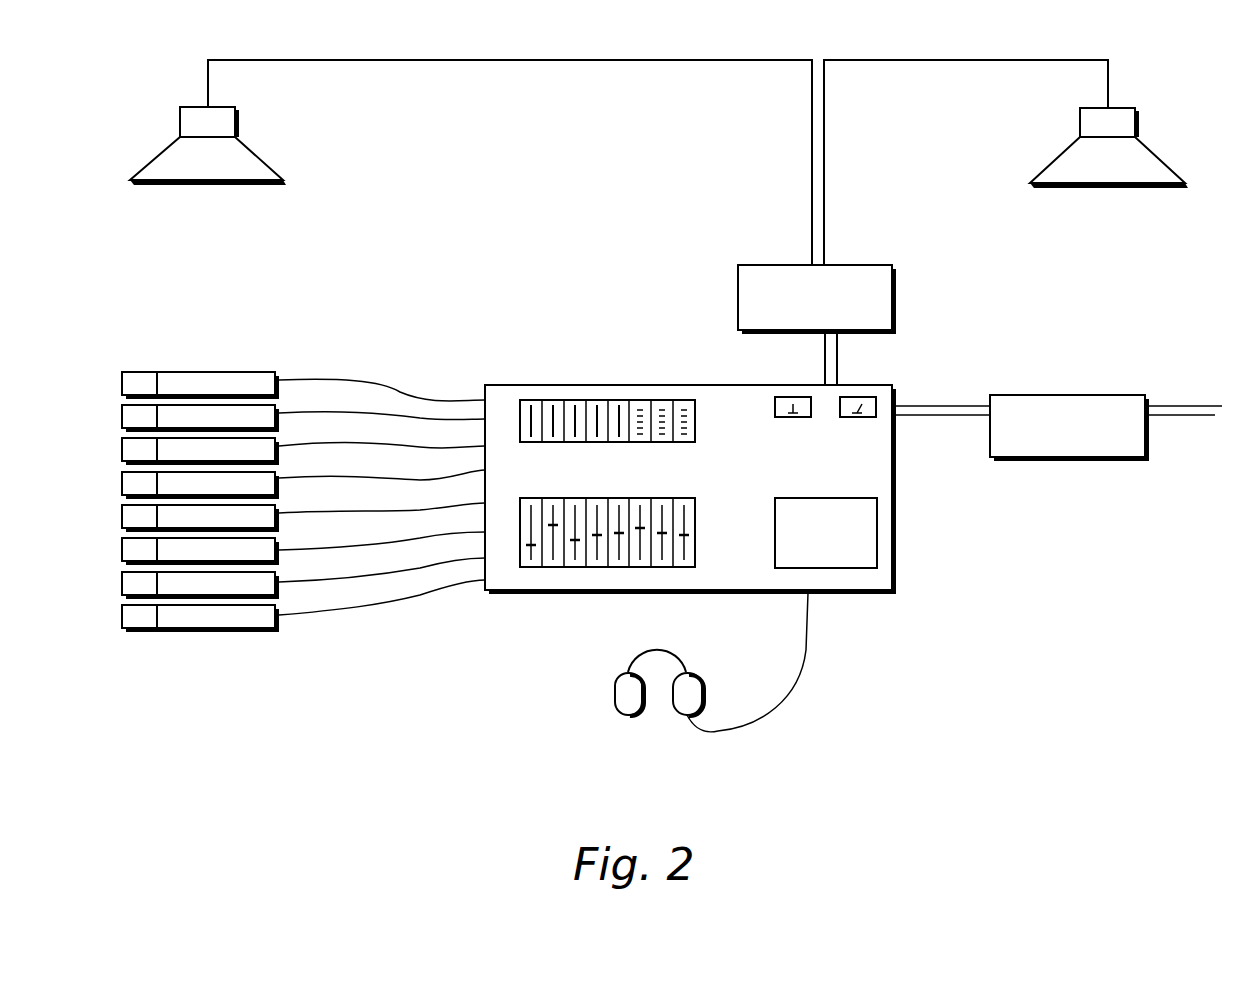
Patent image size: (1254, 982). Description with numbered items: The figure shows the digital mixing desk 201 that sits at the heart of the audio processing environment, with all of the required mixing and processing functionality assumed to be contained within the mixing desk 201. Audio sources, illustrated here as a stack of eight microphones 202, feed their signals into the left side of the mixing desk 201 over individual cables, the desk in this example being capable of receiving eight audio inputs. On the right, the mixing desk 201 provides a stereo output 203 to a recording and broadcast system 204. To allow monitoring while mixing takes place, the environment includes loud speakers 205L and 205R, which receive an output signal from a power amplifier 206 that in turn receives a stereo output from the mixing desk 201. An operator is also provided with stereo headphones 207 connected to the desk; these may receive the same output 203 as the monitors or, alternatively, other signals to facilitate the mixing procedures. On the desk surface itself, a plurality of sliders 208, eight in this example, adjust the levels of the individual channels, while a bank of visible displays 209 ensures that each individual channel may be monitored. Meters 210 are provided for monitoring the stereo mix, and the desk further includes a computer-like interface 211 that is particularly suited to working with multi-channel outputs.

The digital mixing desk 201 is at (712, 485).
The microphones 202 is at (199, 645).
The stereo output 203 is at (947, 405).
The recording and broadcast system 204 is at (1069, 428).
The left loud speaker 205L is at (238, 158).
The right loud speaker 205R is at (1105, 170).
The power amplifier 206 is at (658, 222).
The stereo headphones 207 is at (625, 685).
The sliders 208 is at (540, 555).
The visible displays 209 is at (575, 402).
The meters 210 is at (868, 400).
The computer-like interface 211 is at (853, 558).